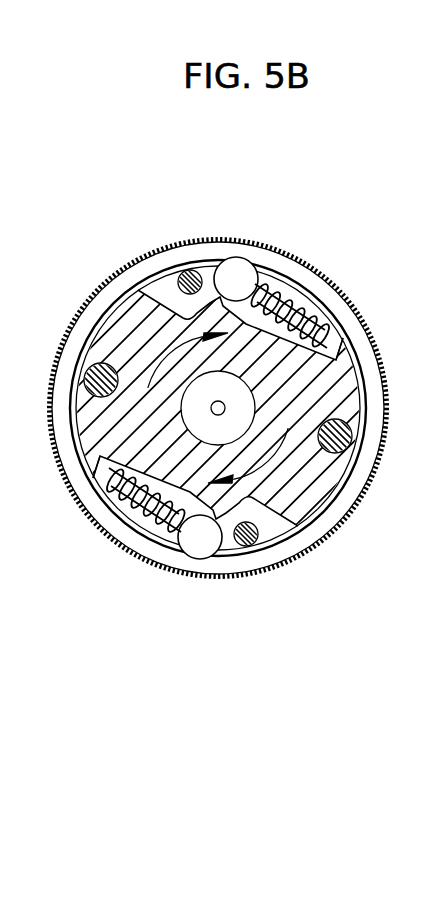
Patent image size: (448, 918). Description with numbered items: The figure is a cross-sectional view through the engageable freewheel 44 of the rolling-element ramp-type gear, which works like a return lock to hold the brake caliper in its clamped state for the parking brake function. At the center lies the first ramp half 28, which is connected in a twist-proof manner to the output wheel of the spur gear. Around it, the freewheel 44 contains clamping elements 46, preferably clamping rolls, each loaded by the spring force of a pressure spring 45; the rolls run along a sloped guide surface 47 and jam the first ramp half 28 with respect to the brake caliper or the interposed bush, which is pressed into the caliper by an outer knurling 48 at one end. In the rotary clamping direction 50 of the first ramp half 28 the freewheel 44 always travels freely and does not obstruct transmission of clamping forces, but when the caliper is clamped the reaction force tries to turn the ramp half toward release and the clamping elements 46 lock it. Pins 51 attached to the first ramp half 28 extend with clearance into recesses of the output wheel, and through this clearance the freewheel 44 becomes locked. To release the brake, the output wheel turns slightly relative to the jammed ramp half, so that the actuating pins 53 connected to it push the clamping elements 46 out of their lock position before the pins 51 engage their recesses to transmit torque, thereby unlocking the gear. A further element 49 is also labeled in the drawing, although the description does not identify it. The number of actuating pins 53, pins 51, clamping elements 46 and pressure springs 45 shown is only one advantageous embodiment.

The first ramp half 28 is at (342, 335).
The engageable freewheel 44 is at (299, 254).
The pressure spring 45 is at (303, 292).
The clamping elements 46 is at (243, 262).
The sloped guide surface 47 is at (224, 278).
The outer knurling 48 is at (232, 580).
The cam rotor 49 is at (185, 342).
The rotary clamping direction 50 is at (100, 456).
The pins 51 is at (86, 378).
The actuating pins 53 is at (183, 271).